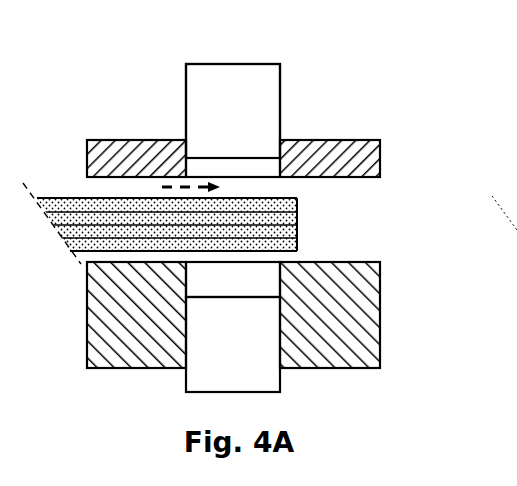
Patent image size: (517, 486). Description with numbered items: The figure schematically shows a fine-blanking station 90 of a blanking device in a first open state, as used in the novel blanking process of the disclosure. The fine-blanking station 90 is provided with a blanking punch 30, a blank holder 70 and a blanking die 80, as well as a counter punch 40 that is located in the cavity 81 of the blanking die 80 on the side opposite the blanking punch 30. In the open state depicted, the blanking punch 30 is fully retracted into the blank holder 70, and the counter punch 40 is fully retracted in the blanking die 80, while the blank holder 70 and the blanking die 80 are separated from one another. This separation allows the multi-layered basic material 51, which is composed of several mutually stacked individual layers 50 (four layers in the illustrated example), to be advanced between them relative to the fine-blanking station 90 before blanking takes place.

The fine-blanking station 90 is at (221, 50).
The blanking punch 30 is at (194, 88).
The blank holder 70 is at (354, 140).
The multi-layered basic material 51 is at (301, 198).
The individual layers 50 is at (92, 242).
The cavity 81 is at (221, 284).
The counter punch 40 is at (198, 377).
The blanking die 80 is at (366, 327).